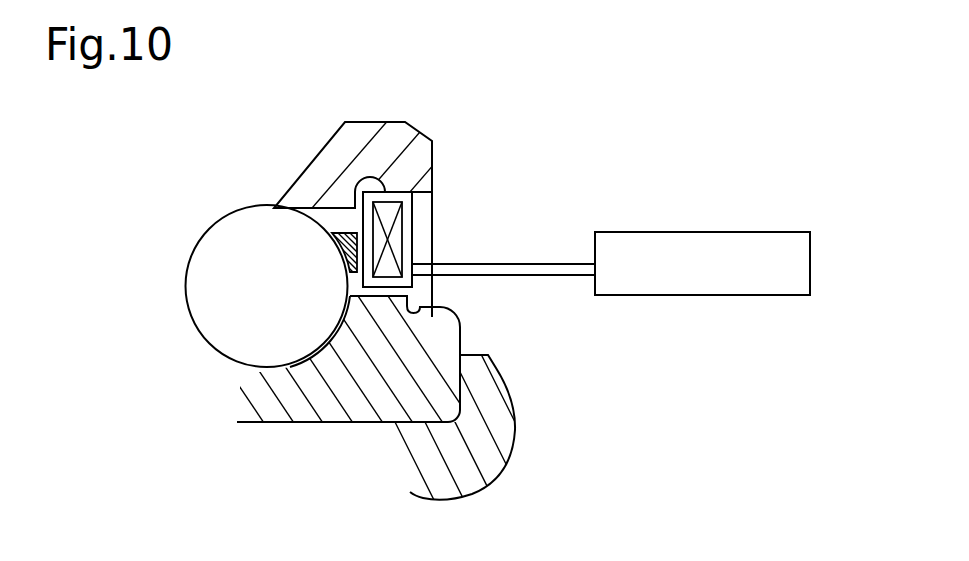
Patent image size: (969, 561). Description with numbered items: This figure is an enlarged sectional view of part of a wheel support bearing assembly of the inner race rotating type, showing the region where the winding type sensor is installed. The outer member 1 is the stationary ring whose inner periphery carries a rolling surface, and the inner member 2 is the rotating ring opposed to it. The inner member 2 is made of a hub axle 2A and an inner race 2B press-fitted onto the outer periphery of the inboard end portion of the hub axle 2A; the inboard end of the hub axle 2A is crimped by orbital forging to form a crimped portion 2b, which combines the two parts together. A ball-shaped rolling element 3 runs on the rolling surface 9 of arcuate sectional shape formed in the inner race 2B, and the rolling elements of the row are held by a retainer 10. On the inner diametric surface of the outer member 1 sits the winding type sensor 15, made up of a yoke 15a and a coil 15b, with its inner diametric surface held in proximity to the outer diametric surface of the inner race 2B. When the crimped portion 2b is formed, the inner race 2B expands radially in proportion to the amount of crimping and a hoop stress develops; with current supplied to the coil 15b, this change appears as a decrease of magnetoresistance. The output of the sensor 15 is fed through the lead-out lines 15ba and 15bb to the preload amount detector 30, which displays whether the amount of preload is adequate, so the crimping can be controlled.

The outer member 1 is at (355, 155).
The inner member 2 is at (334, 399).
The hub axle 2A is at (374, 425).
The inner race 2B is at (264, 371).
The crimped portion 2b is at (478, 400).
The rolling element 3 is at (217, 278).
The rolling surface 9 is at (290, 367).
The retainer 10 is at (343, 235).
The winding type sensor 15 is at (502, 220).
The yoke 15a is at (413, 237).
The coil 15b is at (503, 269).
The lead-out line 15ba is at (510, 264).
The lead-out line 15bb is at (510, 275).
The preload amount detector 30 is at (712, 232).